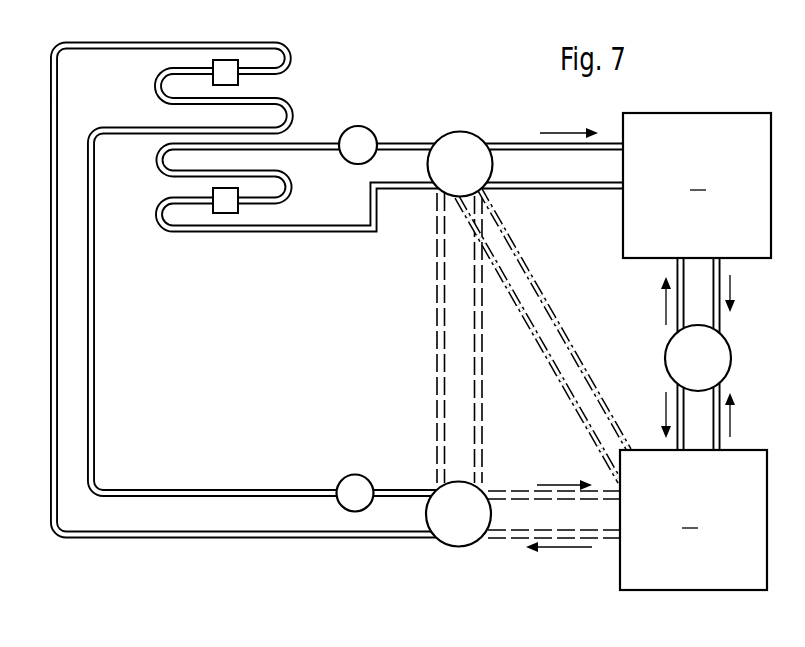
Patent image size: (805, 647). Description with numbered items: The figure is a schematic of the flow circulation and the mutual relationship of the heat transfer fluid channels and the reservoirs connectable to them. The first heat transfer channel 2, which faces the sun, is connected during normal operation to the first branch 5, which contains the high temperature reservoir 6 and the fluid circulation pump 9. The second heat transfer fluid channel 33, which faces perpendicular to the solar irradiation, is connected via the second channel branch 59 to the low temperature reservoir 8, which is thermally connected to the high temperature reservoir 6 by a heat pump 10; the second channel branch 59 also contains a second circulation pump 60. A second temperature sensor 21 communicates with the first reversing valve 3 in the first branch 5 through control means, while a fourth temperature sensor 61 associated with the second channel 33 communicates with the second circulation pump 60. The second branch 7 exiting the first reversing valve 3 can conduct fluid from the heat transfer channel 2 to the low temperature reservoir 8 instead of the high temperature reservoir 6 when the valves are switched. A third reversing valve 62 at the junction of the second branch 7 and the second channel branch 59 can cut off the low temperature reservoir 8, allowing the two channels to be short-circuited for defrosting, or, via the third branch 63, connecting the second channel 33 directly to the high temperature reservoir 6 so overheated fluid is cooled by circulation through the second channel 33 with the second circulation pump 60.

The first heat transfer channel 2 is at (278, 42).
The second temperature sensor 21 is at (213, 70).
The fourth temperature sensor 61 is at (213, 196).
The second heat transfer fluid channel 33 is at (290, 173).
The second channel branch 59 is at (317, 233).
The first branch 5 is at (96, 325).
The second circulation pump 60 is at (369, 129).
The third reversing valve 62 is at (473, 131).
The fluid circulation pump 9 is at (357, 474).
The first reversing valve 3 is at (491, 514).
The second branch 7 is at (486, 413).
The third branch 63 is at (556, 372).
The heat pump 10 is at (731, 358).
The low temperature reservoir 8 is at (697, 185).
The high temperature reservoir 6 is at (693, 520).